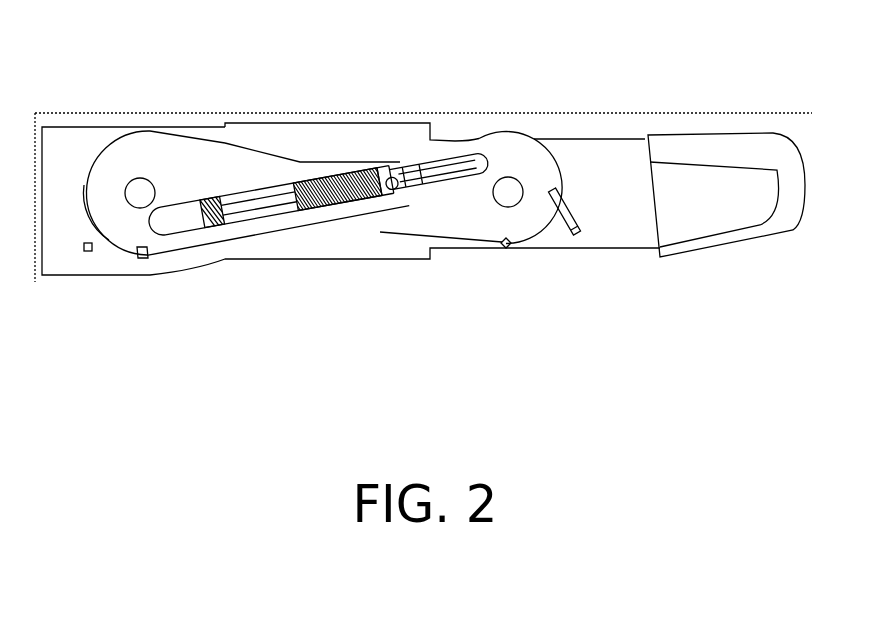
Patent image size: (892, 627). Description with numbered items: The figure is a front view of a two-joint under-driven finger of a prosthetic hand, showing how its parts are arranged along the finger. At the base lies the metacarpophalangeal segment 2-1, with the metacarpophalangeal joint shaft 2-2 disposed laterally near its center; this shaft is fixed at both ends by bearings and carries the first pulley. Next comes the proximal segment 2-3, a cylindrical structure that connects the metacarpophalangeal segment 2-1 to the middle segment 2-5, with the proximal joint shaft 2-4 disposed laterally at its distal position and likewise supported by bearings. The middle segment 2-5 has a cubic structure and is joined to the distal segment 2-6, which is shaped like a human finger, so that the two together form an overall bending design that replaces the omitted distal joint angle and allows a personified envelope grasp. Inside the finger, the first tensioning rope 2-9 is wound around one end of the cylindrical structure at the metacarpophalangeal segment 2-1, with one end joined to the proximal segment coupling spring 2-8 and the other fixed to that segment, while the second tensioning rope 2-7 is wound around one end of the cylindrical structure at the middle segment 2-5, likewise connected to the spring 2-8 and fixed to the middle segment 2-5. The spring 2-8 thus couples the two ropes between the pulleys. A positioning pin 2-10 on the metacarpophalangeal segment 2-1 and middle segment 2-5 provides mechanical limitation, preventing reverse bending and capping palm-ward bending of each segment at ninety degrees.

The metacarpophalangeal segment 1 is at (68, 156).
The metacarpophalangeal joint shaft 2 is at (145, 177).
The proximal segment 3 is at (312, 129).
The proximal joint shaft 4 is at (512, 176).
The middle segment 5 is at (601, 164).
The distal segment 6 is at (736, 163).
The second tensioning rope 7 is at (440, 180).
The proximal segment coupling spring 8 is at (332, 212).
The first tensioning rope 9 is at (218, 248).
The positioning pin 10 is at (142, 262).